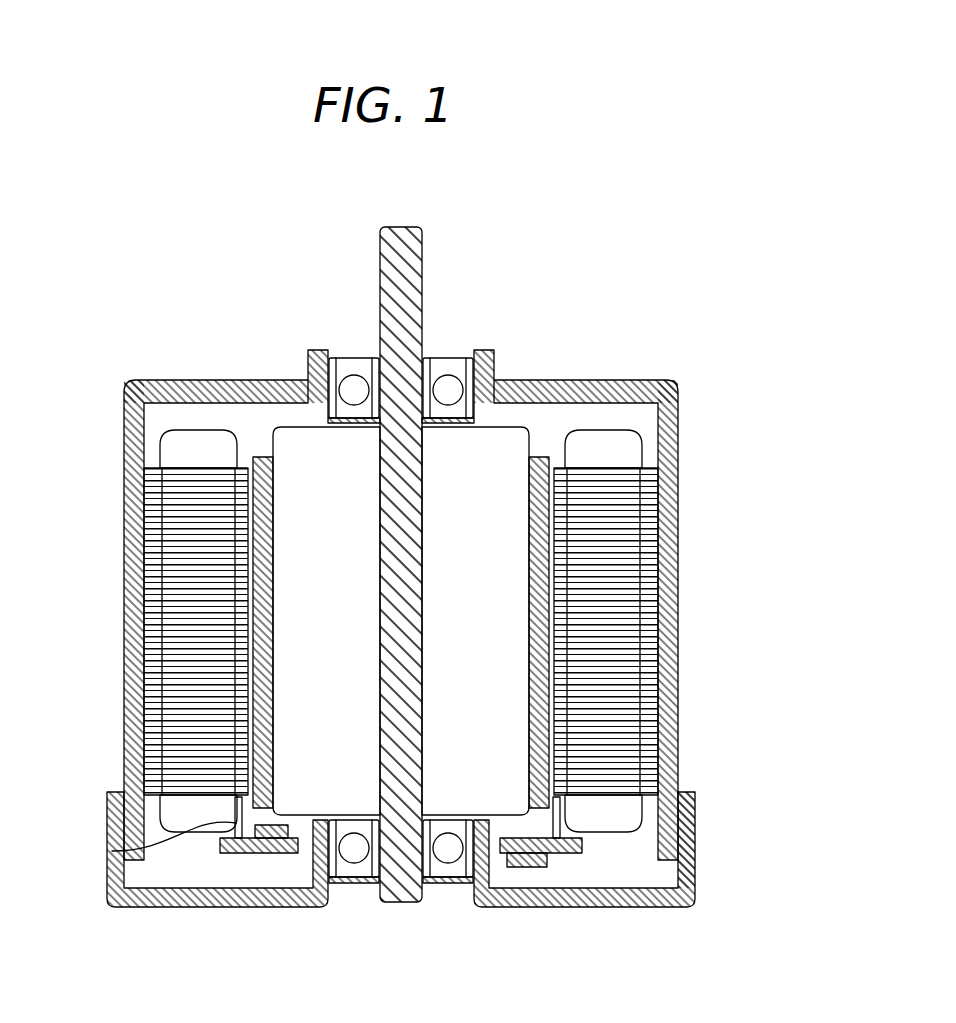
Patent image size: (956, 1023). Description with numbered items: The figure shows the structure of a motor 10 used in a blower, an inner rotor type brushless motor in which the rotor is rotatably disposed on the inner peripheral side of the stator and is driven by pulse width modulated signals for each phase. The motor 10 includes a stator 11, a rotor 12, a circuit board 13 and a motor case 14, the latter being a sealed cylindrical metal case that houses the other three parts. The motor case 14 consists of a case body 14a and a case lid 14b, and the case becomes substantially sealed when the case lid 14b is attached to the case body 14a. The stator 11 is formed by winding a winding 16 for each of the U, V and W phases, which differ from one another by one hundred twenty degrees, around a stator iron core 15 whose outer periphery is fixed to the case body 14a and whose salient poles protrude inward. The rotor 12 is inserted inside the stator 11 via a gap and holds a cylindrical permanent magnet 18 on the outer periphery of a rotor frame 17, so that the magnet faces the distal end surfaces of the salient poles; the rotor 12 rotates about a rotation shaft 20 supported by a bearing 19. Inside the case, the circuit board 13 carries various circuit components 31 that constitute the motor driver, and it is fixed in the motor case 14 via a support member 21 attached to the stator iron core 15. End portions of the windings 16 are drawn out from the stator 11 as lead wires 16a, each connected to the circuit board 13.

The motor 10 is at (152, 378).
The stator 11 is at (503, 570).
The rotor 12 is at (382, 560).
The circuit board 13 is at (248, 856).
The motor case 14 is at (503, 643).
The case body 14a is at (661, 770).
The case lid 14b is at (694, 822).
The stator iron core 15 is at (678, 480).
The winding 16 is at (677, 582).
The lead wire 16a is at (694, 881).
The rotor frame 17 is at (297, 443).
The permanent magnet 18 is at (263, 455).
The bearing 19 is at (355, 365).
The rotation shaft 20 is at (423, 282).
The support member 21 is at (112, 851).
The circuit component 31 is at (275, 853).